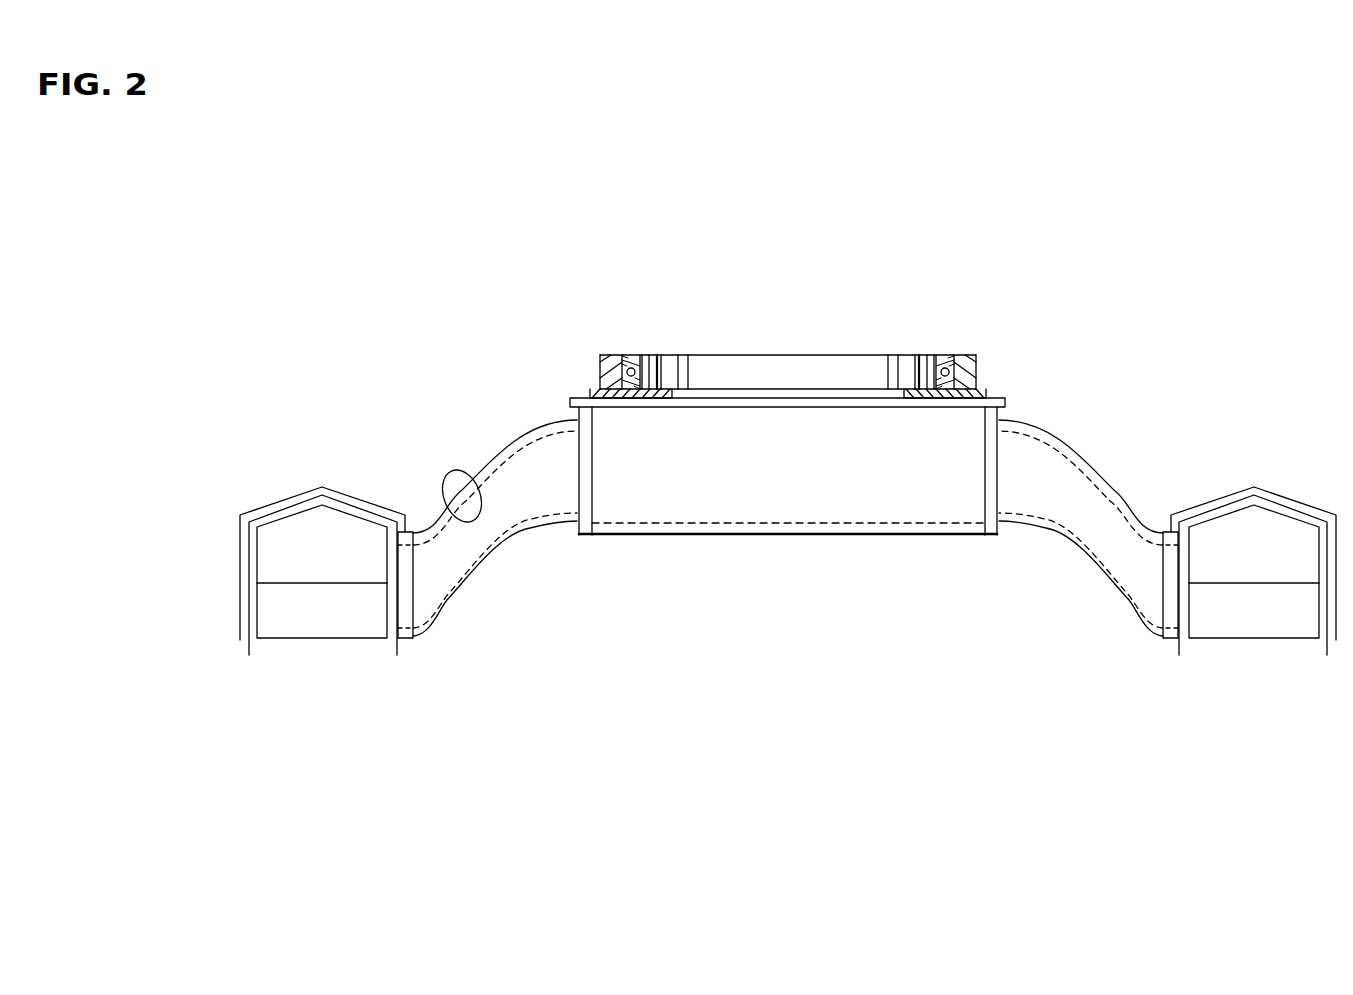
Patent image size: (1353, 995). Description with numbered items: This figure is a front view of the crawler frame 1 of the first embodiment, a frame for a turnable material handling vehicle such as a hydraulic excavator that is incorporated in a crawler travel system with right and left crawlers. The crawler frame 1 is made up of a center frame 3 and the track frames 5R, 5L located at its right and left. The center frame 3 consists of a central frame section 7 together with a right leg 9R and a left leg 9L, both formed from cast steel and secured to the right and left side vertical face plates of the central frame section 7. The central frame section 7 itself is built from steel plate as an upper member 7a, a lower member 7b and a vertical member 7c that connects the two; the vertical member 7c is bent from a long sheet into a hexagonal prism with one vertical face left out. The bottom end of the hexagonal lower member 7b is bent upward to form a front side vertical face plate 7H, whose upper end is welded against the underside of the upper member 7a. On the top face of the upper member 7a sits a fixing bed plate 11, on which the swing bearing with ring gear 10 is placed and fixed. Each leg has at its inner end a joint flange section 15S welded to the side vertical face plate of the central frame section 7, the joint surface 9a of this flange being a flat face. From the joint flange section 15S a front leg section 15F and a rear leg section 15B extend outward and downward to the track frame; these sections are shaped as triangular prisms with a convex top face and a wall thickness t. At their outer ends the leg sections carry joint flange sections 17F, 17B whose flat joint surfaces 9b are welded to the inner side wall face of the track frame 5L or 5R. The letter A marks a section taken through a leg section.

The crawler frame 1 is at (825, 341).
The center frame 3 is at (905, 697).
The left track frame 5L is at (280, 498).
The right track frame 5R is at (1302, 505).
The central frame section 7 is at (861, 484).
The upper member 7a is at (1000, 397).
The lower member 7b is at (932, 540).
The vertical member 7c is at (1000, 457).
The front side vertical face plate 7H is at (885, 485).
The left leg 9L is at (536, 594).
The right leg 9R is at (1035, 568).
The joint surface 9a is at (990, 493).
The joint surface 9b is at (1177, 622).
The swing bearing with ring gear 10 is at (608, 353).
The fixing bed plate 11 is at (592, 393).
The joint flange section 15S is at (563, 519).
The front leg section 15F is at (447, 567).
The rear leg section 15B is at (523, 633).
The joint flange section 17F is at (400, 612).
The joint flange section 17B is at (400, 612).
The wall thickness t is at (478, 500).
The section line A is at (1102, 450).